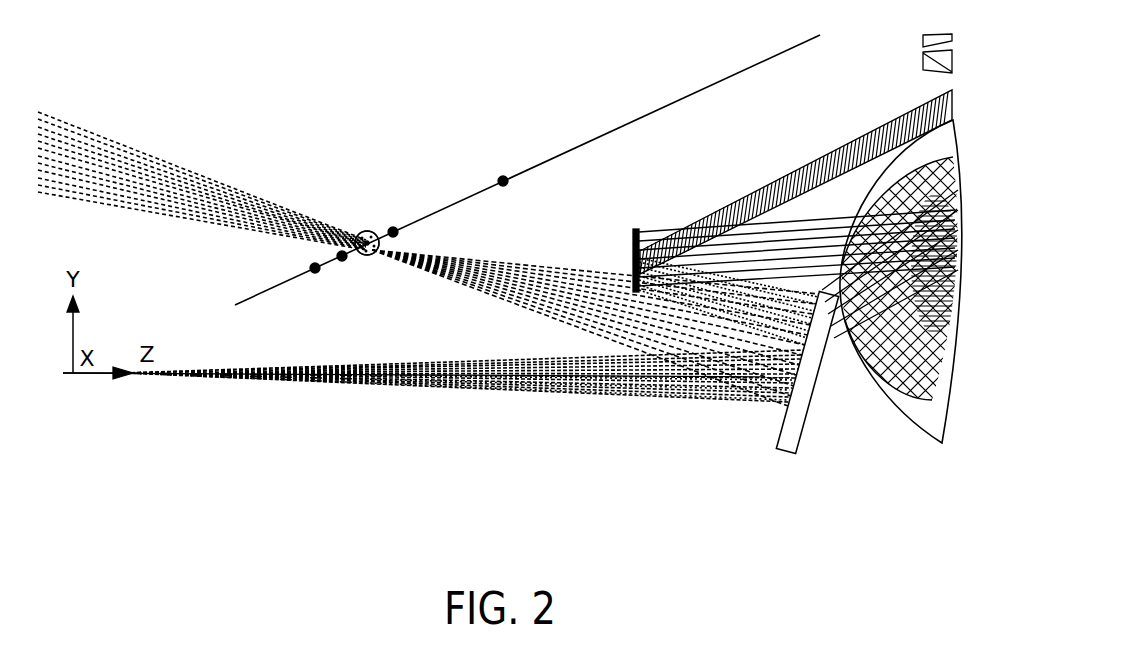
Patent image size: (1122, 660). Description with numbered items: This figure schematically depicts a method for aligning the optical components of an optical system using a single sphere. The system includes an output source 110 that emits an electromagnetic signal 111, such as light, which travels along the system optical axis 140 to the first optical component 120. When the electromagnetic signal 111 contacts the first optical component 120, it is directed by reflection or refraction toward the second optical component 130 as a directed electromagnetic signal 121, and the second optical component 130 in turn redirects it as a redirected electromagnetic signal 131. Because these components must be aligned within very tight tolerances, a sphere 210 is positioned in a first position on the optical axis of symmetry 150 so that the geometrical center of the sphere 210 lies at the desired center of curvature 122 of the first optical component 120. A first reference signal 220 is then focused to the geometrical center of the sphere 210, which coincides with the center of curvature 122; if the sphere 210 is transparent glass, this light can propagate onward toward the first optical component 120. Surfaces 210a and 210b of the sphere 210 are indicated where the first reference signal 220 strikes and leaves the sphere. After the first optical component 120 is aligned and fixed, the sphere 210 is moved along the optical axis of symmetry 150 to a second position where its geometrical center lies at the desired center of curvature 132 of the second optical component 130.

The output source 110 is at (120, 378).
The electromagnetic signal 111 is at (558, 393).
The first optical component 120 is at (790, 452).
The directed electromagnetic signal 121 is at (707, 400).
The center of curvature of the first optical component 122 is at (362, 233).
The second optical component 130 is at (634, 228).
The redirected electromagnetic signal 131 is at (862, 135).
The center of curvature of the second optical component 132 is at (346, 262).
The system optical axis 140 is at (460, 386).
The optical axis of symmetry 150 is at (591, 131).
The sphere 210 is at (383, 224).
The first surface of lens element 210a is at (371, 231).
The second surface of lens element 210b is at (380, 257).
The first reference signal 220 is at (109, 140).